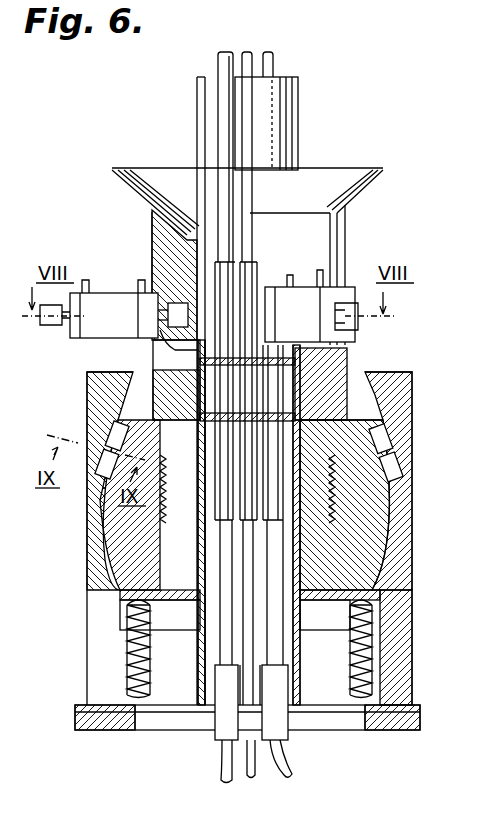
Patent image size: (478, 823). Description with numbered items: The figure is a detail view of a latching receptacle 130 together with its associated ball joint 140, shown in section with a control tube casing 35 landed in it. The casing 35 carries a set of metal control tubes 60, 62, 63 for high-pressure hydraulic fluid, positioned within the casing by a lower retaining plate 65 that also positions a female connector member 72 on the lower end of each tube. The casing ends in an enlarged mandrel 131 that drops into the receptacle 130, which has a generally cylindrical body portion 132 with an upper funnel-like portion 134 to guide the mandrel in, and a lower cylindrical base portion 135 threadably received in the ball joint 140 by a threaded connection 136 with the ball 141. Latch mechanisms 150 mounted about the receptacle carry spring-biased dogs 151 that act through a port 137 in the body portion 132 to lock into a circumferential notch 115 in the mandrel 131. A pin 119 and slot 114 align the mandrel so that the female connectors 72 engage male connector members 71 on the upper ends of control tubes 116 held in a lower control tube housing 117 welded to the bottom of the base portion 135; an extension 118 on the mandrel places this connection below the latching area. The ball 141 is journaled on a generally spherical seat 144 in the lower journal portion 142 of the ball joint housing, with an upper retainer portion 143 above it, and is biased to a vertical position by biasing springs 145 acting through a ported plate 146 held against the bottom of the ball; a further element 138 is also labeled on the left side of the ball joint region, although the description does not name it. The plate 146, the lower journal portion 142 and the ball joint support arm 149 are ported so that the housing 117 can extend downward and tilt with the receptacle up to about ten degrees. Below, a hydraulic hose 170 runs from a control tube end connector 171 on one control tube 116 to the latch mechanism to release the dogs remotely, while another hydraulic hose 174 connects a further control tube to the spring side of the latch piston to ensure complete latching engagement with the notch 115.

The control tube 60 is at (218, 58).
The control tube 62 is at (274, 62).
The control tube 63 is at (247, 52).
The control tube casing 35 is at (285, 115).
The funnel-like portion 134 is at (135, 194).
The latching receptacle 130 is at (345, 240).
The body portion 132 is at (160, 242).
The mandrel 131 is at (180, 270).
The circumferential notch 115 is at (162, 290).
The latch mechanism 150 is at (67, 345).
The dog 151 is at (166, 314).
The port 137 is at (162, 335).
The pin 119 is at (153, 364).
The lower retaining plate 65 is at (340, 362).
The female connector member 72 is at (270, 380).
The extension 118 is at (340, 395).
The male connector member 71 is at (276, 468).
The ball joint 140 is at (412, 552).
The spherical seat 144 is at (120, 576).
The slot 114 is at (133, 384).
The roller 138 is at (110, 425).
The threaded connection 136 is at (336, 504).
The ball 141 is at (416, 475).
The base portion 135 is at (372, 412).
The upper retainer portion 143 is at (400, 424).
The lower journal portion 142 is at (400, 574).
The ported plate 146 is at (125, 594).
The control tube 116 is at (225, 600).
The biasing spring 145 is at (127, 621).
The ball joint support arm 149 is at (100, 732).
The lower control tube housing 117 is at (175, 732).
The control tube end connector 171 is at (213, 742).
The hydraulic hose 170 is at (221, 775).
The hydraulic hose 174 is at (288, 768).